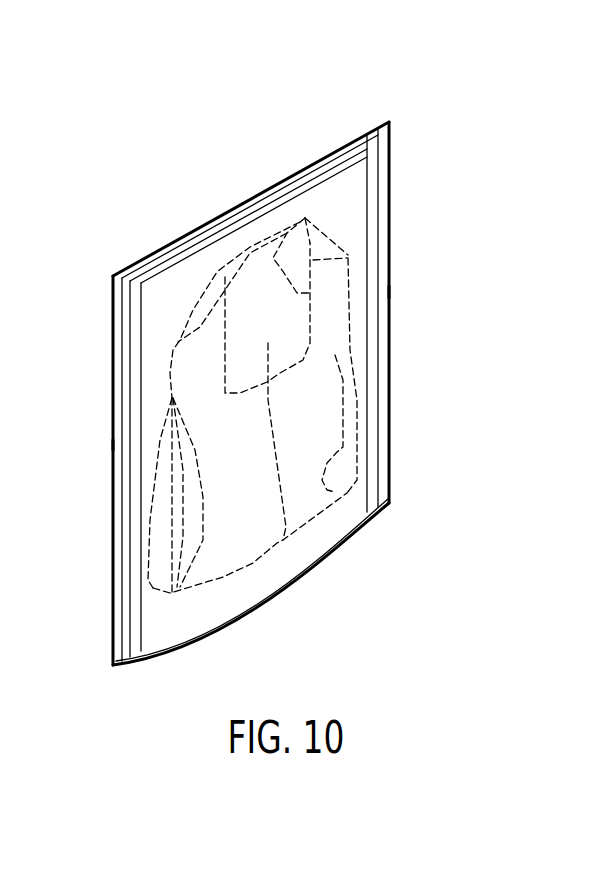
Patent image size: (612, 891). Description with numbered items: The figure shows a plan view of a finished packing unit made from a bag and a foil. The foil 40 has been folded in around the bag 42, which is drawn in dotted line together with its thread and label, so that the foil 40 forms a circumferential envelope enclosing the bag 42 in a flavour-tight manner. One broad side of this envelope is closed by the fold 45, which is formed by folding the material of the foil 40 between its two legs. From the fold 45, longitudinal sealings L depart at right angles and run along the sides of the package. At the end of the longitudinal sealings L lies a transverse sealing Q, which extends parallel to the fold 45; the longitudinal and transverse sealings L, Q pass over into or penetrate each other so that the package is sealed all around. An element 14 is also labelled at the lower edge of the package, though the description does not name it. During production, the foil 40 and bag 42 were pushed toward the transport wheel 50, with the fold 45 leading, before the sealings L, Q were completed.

The bag 14 is at (373, 517).
The foil 40 is at (141, 316).
The bag 42 is at (171, 593).
The fold 45 is at (245, 602).
The transport wheel 50 is at (384, 121).
The longitudinal sealings L is at (112, 448).
The transverse sealing Q is at (315, 163).